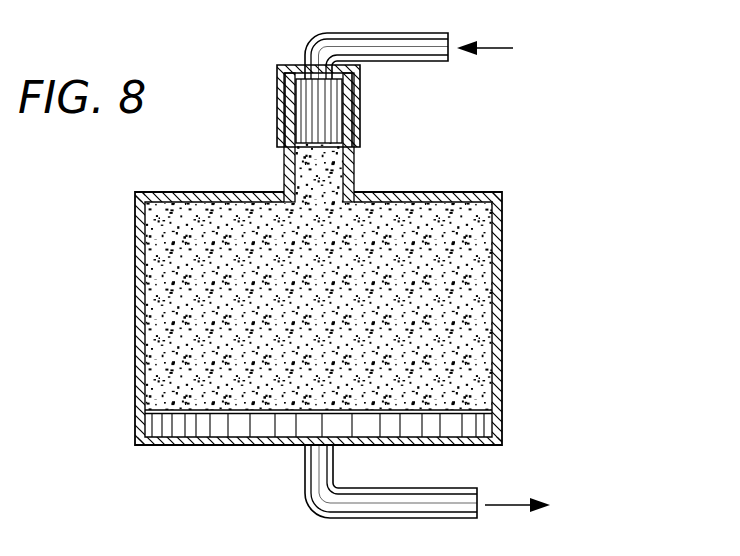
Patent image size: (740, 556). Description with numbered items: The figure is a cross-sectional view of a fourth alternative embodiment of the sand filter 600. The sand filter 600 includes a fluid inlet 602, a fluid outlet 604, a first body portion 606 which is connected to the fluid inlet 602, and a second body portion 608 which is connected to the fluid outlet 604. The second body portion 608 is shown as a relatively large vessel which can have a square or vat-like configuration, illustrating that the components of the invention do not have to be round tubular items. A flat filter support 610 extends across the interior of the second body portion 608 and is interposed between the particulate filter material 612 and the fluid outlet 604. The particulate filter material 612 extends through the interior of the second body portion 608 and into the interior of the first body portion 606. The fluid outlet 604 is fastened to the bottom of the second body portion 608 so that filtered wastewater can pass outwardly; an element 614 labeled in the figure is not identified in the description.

The sand filter 600 is at (475, 175).
The fluid inlet 602 is at (424, 62).
The fluid outlet 604 is at (303, 488).
The first body portion 606 is at (356, 165).
The second body portion 608 is at (502, 393).
The filter support 610 is at (205, 413).
The particulate filter material 612 is at (467, 288).
The inlet tube 614 is at (313, 42).